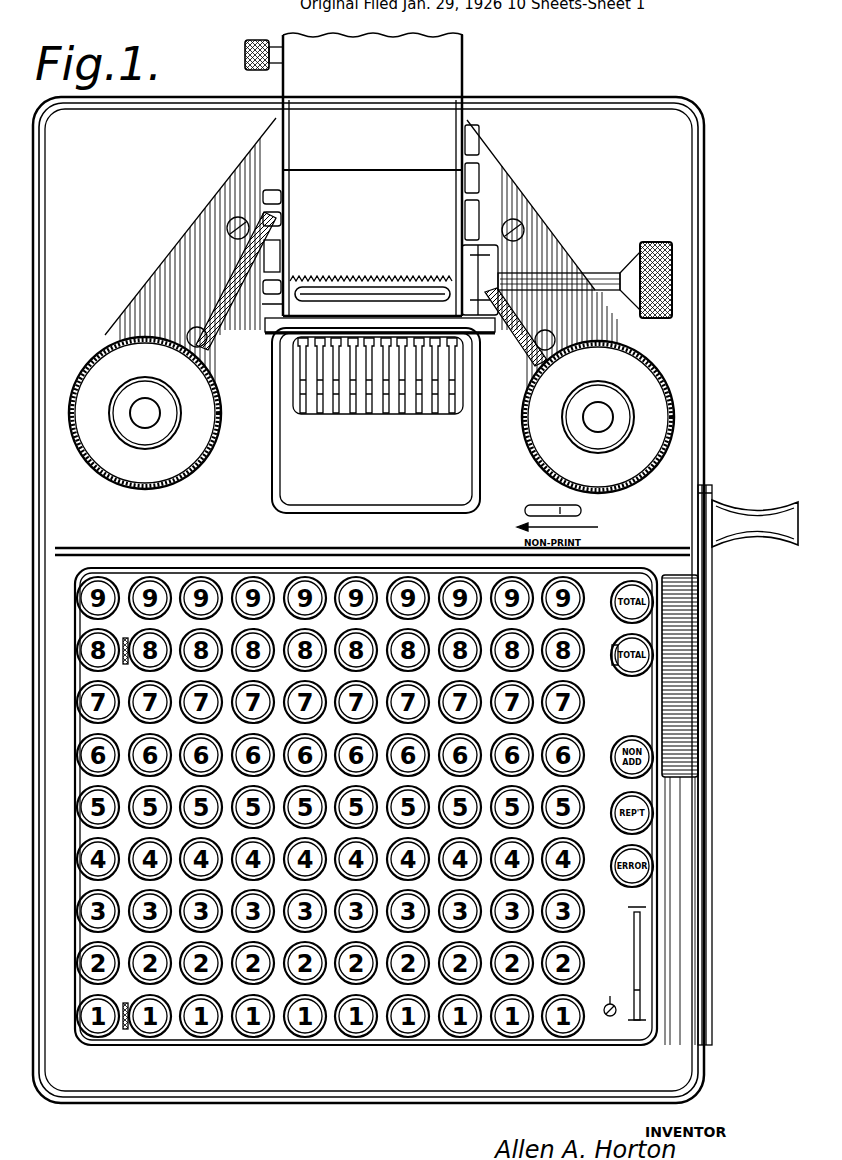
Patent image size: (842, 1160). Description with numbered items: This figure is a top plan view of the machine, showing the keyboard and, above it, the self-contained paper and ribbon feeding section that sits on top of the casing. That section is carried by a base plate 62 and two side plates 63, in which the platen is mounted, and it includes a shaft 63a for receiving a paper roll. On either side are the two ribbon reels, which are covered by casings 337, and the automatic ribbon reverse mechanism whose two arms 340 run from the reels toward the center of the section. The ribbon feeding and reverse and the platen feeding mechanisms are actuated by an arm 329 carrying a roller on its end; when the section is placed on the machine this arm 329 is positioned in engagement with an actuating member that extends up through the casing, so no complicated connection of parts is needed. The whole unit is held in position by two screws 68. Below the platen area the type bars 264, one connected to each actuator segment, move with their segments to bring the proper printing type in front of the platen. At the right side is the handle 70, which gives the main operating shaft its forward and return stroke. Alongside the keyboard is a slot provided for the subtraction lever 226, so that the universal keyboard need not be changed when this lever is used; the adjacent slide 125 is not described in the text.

The side plates 63 is at (488, 83).
The shaft for receiving a paper roll 63a is at (462, 58).
The arm 329 is at (473, 147).
The screws 68 is at (565, 224).
The base plate 62 is at (540, 217).
The arms 340 is at (545, 370).
The casings 337 is at (645, 452).
The type bar 264 is at (452, 345).
The handle 70 is at (705, 668).
The slide 125 is at (680, 760).
The subtraction lever 226 is at (640, 995).